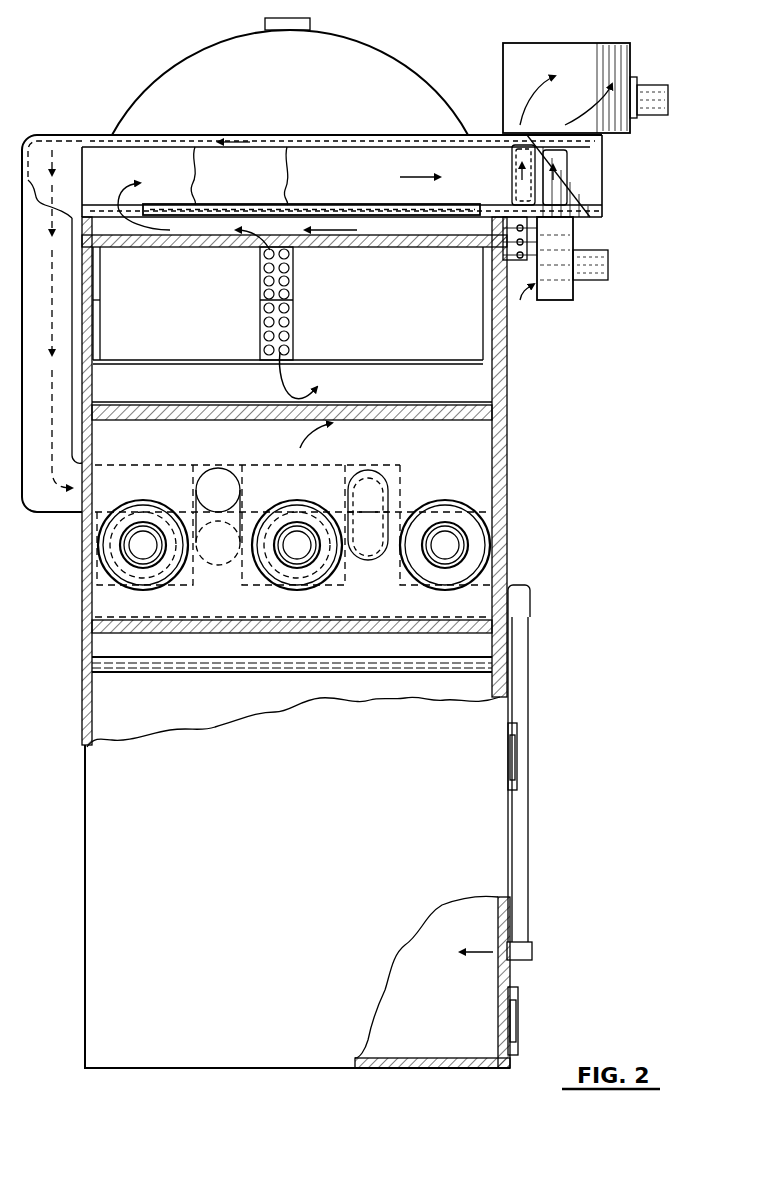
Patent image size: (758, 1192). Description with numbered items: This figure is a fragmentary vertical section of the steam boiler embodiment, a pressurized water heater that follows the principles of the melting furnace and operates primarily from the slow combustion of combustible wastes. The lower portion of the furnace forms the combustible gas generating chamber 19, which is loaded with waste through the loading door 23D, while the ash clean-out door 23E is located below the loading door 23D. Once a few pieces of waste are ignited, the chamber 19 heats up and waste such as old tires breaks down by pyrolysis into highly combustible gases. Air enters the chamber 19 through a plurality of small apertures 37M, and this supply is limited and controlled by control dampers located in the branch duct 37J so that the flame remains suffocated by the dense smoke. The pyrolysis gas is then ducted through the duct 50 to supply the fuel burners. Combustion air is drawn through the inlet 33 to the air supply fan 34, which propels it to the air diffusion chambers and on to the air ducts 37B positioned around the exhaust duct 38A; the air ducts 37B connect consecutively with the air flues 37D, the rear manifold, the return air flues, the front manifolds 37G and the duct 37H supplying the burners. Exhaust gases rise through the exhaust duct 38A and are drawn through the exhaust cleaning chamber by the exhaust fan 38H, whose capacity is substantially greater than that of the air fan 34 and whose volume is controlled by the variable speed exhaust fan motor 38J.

The combustible gas generating chamber 19 is at (443, 690).
The loading door 23D is at (520, 757).
The ash clean-out door 23E is at (520, 1020).
The inlet 33 is at (528, 300).
The air supply fan 34 is at (585, 290).
The air ducts 37B is at (212, 143).
The air flues 37D is at (218, 480).
The front manifolds 37G is at (218, 550).
The duct 37H is at (300, 620).
The branch duct 37J is at (528, 822).
The air inlet apertures 37M is at (495, 952).
The exhaust duct 38A is at (300, 160).
The exhaust fan 38H is at (622, 62).
The exhaust fan motor 38J is at (650, 85).
The duct 50 is at (352, 656).